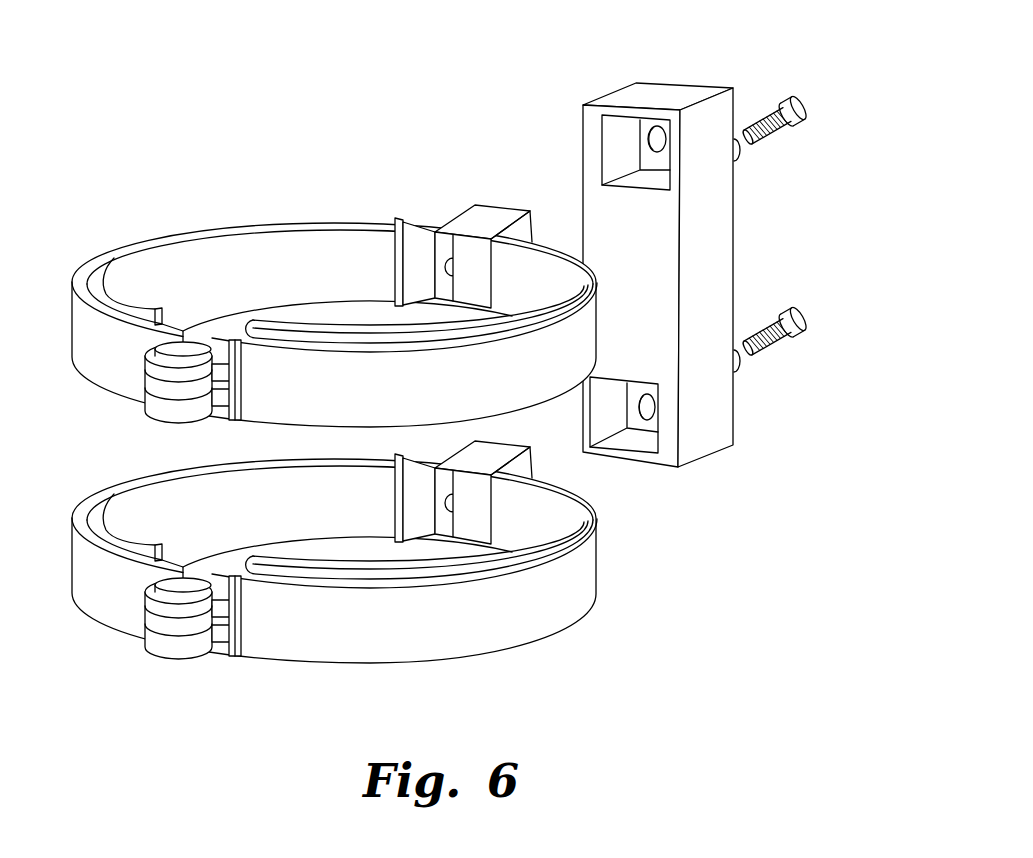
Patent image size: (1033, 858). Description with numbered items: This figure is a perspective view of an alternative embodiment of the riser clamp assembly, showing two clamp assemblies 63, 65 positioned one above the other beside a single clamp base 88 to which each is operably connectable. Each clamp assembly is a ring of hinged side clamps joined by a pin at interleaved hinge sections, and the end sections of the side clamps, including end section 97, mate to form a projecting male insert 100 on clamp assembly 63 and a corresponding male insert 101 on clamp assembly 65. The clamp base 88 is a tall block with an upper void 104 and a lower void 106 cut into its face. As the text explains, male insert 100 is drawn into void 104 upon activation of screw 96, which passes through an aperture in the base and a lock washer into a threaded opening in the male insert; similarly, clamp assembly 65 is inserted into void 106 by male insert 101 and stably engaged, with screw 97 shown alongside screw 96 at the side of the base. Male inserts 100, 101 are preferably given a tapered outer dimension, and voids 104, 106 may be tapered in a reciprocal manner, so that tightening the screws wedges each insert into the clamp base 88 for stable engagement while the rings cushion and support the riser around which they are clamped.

The clamp assembly 63 is at (310, 182).
The clamp assembly 65 is at (481, 682).
The clamp base 88 is at (632, 266).
The screw 96 is at (802, 101).
The end section 97 is at (800, 319).
The male insert 100 is at (494, 160).
The male insert 101 is at (563, 470).
The void 104 is at (617, 135).
The void 106 is at (650, 443).